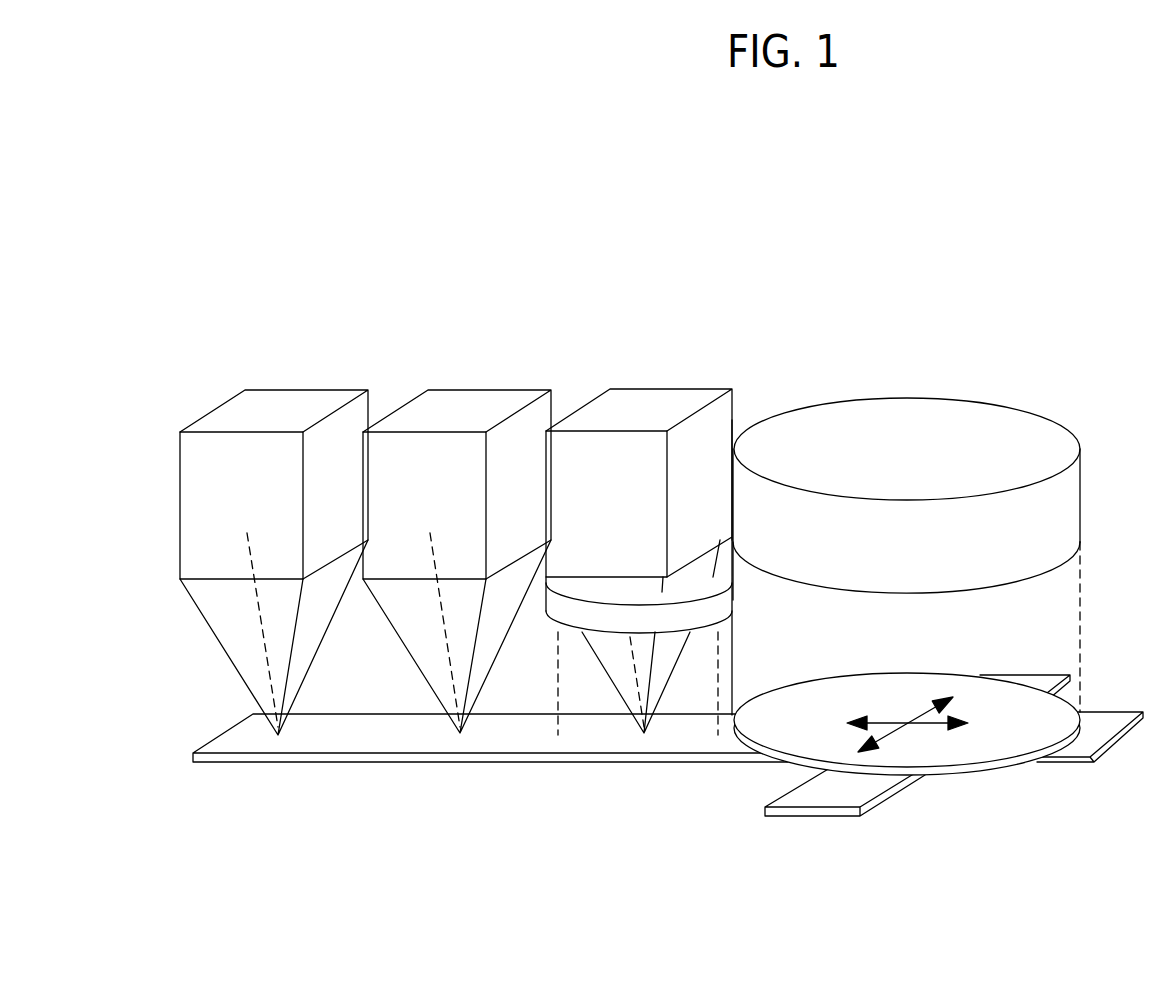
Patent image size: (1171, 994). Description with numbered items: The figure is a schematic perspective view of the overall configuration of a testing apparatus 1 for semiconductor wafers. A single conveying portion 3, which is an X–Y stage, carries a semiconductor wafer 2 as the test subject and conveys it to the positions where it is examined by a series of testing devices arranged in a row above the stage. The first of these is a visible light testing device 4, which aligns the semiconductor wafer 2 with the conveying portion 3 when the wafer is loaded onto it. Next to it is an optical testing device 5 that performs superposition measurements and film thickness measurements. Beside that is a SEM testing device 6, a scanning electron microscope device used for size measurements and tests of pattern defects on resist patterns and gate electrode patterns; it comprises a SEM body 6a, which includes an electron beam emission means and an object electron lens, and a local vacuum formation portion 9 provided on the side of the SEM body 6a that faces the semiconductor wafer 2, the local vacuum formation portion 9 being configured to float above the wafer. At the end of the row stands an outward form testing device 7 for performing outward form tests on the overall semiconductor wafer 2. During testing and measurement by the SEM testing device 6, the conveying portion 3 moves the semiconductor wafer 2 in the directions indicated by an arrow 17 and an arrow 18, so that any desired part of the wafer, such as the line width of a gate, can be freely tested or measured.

The testing apparatus 1 is at (895, 176).
The semiconductor wafer 2 is at (1053, 723).
The conveying portion (X–Y stage) 3 is at (678, 762).
The visible light testing device 4 is at (278, 398).
The optical testing device 5 is at (468, 398).
The SEM testing device 6 is at (625, 398).
The SEM body 6a is at (718, 428).
The outward form testing device 7 is at (977, 423).
The local vacuum formation portion 9 is at (563, 612).
The arrow 17 is at (927, 725).
The arrow 18 is at (893, 735).